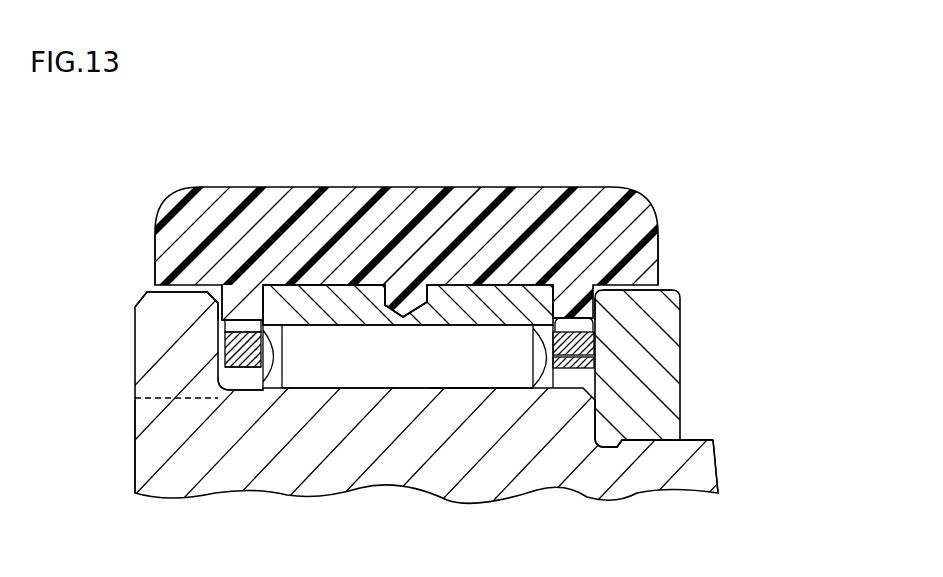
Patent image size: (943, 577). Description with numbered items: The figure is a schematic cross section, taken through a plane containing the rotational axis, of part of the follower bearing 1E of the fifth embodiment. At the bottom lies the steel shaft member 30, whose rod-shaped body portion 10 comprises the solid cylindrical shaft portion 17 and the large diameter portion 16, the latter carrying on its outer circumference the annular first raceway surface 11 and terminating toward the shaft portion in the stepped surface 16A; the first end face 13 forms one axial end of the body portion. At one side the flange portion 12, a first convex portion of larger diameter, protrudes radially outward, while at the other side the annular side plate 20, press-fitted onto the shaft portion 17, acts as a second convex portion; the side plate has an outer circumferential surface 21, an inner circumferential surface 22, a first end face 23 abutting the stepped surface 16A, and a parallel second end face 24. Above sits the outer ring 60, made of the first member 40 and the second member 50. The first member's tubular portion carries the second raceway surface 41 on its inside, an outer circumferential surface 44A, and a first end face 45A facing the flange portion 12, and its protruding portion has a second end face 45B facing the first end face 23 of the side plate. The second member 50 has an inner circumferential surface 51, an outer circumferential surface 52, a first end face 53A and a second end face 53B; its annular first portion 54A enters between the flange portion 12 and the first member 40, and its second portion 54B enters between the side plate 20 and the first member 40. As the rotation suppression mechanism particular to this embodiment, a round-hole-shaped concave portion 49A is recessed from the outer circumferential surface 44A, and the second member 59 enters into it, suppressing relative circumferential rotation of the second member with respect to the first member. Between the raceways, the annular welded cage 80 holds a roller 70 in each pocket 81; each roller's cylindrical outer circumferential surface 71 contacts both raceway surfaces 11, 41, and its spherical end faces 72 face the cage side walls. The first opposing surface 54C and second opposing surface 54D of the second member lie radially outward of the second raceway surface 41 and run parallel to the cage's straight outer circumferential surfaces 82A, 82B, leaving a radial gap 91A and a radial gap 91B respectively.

The follower bearing 1E is at (767, 150).
The body portion 10 is at (697, 452).
The first raceway surface 11 is at (522, 372).
The flange portion 12 is at (160, 332).
The first end face 13 is at (135, 478).
The large diameter portion 16 is at (366, 410).
The stepped surface 16A is at (660, 425).
The shaft portion 17 is at (698, 475).
The side plate 20 is at (660, 436).
The outer circumferential surface 21 is at (585, 305).
The inner circumferential surface 22 is at (641, 442).
The first end face 23 is at (517, 305).
The second end face 24 is at (682, 333).
The shaft member 30 is at (775, 402).
The first member 40 is at (449, 270).
The second raceway surface 41 is at (357, 300).
The outer circumferential surface 44A is at (338, 300).
The first end face 45A is at (275, 295).
The second end face 45B is at (566, 305).
The concave portion 49A is at (394, 300).
The second member 50 is at (430, 150).
The inner circumferential surface 51 is at (330, 332).
The outer circumferential surface 52 is at (231, 187).
The first end face 53A is at (153, 253).
The second end face 53B is at (647, 247).
The first portion 54A is at (247, 322).
The second portion 54B is at (640, 210).
The first opposing surface 54C is at (224, 350).
The second opposing surface 54D is at (596, 342).
The second member 59 is at (414, 295).
The outer ring 60 is at (398, 225).
The roller 70 is at (403, 372).
The outer circumferential surface 71 is at (452, 330).
The end face 72 is at (596, 360).
The cage 80 is at (240, 403).
The pocket 81 is at (268, 368).
The outer circumferential surface 82A is at (220, 305).
The outer circumferential surface 82B is at (575, 300).
The radial gap 91A is at (247, 320).
The radial gap 91B is at (595, 322).